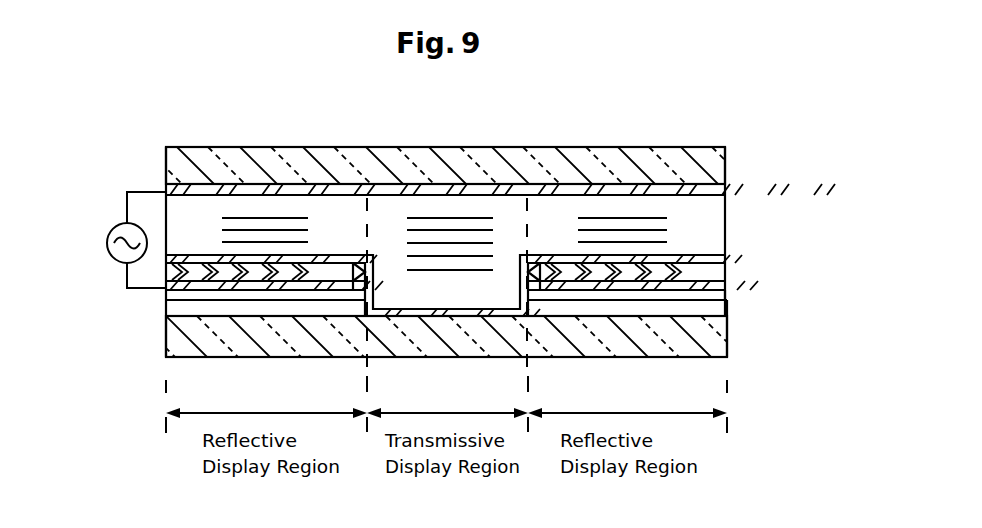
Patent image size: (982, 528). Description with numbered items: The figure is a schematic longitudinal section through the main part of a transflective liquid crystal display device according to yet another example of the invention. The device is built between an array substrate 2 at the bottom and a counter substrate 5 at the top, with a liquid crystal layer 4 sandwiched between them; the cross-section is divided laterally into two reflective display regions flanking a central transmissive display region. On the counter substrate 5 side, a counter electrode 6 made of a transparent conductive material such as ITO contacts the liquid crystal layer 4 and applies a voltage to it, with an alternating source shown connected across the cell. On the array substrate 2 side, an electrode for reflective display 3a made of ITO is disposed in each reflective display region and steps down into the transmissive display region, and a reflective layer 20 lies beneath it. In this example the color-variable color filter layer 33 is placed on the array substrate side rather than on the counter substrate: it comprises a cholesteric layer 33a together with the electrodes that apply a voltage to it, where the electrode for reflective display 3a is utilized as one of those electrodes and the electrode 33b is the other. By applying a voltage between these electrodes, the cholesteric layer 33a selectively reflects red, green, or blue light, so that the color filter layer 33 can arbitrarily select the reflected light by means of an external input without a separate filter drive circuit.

The array substrate 2 is at (84, 293).
The electrode for reflective display 3a is at (728, 255).
The liquid crystal layer 4 is at (84, 223).
The counter substrate 5 is at (84, 150).
The counter electrode 6 is at (720, 210).
The reflective layer 20 is at (165, 298).
The color-variable color filter layer 33 is at (518, 273).
The cholesteric layer 33a is at (725, 267).
The electrode 33b is at (725, 284).